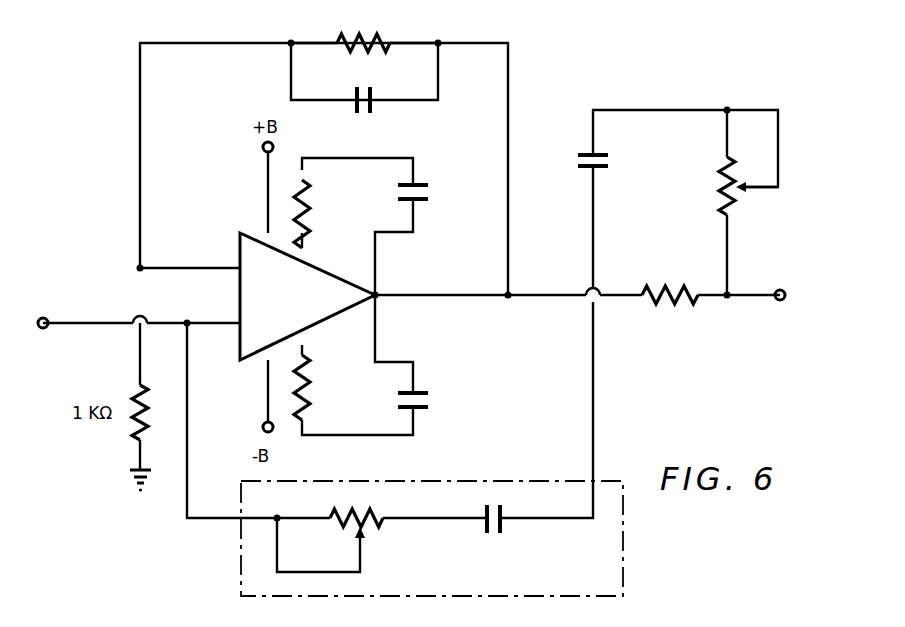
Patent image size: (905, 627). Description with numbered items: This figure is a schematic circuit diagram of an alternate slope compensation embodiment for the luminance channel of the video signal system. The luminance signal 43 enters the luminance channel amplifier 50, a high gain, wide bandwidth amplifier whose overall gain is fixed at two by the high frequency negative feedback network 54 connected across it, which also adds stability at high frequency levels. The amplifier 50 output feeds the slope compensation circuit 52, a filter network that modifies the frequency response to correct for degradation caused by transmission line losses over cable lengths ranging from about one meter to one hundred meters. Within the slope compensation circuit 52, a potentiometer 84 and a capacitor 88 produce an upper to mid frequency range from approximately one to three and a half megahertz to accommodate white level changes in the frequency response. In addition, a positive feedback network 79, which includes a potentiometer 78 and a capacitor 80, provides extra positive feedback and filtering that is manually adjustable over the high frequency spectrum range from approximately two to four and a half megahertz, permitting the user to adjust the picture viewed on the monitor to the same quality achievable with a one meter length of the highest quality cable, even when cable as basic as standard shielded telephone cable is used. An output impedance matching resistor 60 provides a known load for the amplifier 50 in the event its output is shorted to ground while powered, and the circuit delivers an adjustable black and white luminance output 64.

The luminance signal 43 is at (78, 320).
The luminance channel amplifier 50 is at (240, 250).
The slope compensation circuit 52 is at (665, 111).
The high frequency negative feedback network 54 is at (293, 27).
The output impedance matching resistor 60 is at (680, 290).
The luminance output 64 is at (780, 302).
The potentiometer 78 is at (365, 510).
The positive feedback network 79 is at (453, 485).
The capacitor 80 is at (508, 512).
The potentiometer 84 is at (755, 110).
The capacitor 88 is at (585, 172).